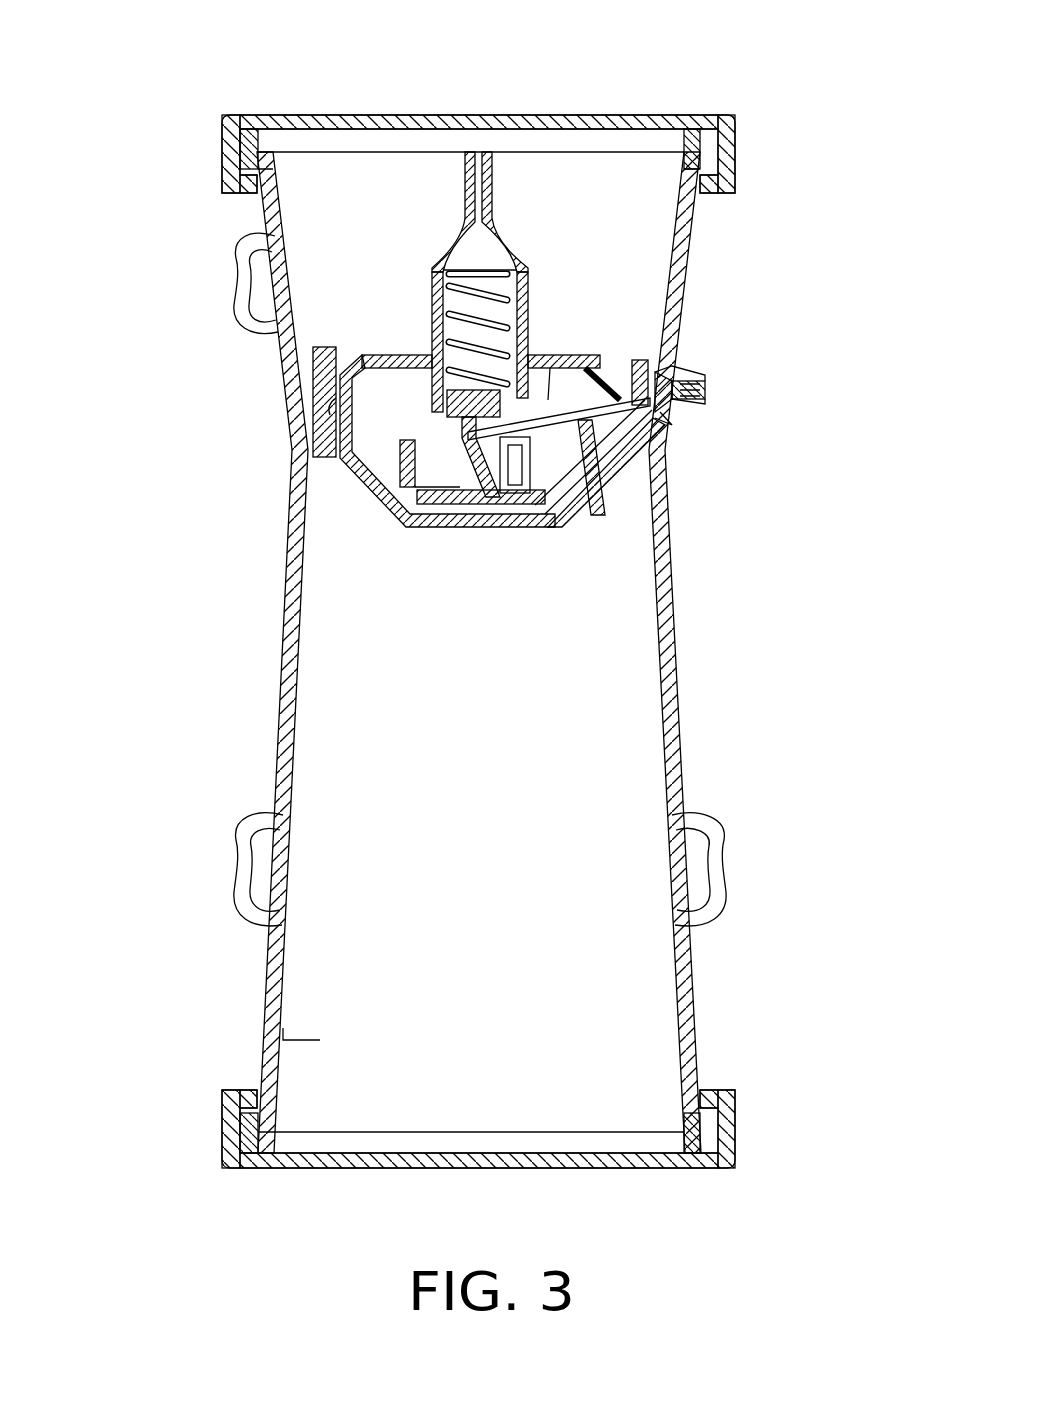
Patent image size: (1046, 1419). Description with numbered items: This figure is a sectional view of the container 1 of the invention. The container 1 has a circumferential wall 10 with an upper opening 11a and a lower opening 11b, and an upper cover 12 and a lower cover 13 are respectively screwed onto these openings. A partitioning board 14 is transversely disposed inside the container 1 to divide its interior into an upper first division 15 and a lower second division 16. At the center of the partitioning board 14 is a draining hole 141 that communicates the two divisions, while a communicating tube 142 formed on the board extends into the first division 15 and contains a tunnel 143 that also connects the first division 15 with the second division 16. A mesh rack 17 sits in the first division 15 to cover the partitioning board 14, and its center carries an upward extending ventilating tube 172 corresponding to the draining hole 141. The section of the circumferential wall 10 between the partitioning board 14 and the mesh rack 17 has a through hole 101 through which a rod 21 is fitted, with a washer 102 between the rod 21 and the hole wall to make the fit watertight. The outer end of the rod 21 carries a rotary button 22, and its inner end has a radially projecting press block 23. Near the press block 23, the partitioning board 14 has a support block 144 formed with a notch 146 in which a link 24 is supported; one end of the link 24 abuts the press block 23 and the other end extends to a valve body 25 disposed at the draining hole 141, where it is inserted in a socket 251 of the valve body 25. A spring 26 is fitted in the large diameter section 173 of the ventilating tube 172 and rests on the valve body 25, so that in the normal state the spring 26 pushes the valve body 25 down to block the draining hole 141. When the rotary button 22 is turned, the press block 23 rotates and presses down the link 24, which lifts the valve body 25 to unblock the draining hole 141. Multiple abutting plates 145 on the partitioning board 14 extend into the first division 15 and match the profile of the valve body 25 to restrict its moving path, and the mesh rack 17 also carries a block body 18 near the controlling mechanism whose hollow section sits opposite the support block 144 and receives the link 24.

The container 1 is at (258, 728).
The circumferential wall 10 is at (690, 715).
The upper opening 11a is at (277, 187).
The lower opening 11b is at (693, 1067).
The upper cover 12 is at (628, 117).
The lower cover 13 is at (607, 1168).
The partitioning board 14 is at (406, 489).
The draining hole 141 is at (512, 522).
The communicating tube 142 is at (313, 362).
The tunnel 143 is at (320, 408).
The support block 144 is at (590, 432).
The abutting plates 145 is at (405, 455).
The notch 146 is at (606, 425).
The first division 15 is at (300, 210).
The second division 16 is at (618, 1017).
The mesh rack 17 is at (475, 320).
The ventilating tube 172 is at (525, 290).
The large diameter section 173 is at (452, 300).
The block body 18 is at (660, 355).
The through hole 101 is at (660, 378).
The washer 102 is at (688, 412).
The rod 21 is at (657, 420).
The rotary button 22 is at (700, 402).
The press block 23 is at (628, 358).
The link 24 is at (559, 410).
The valve body 25 is at (510, 522).
The socket 251 is at (540, 492).
The spring 26 is at (487, 265).